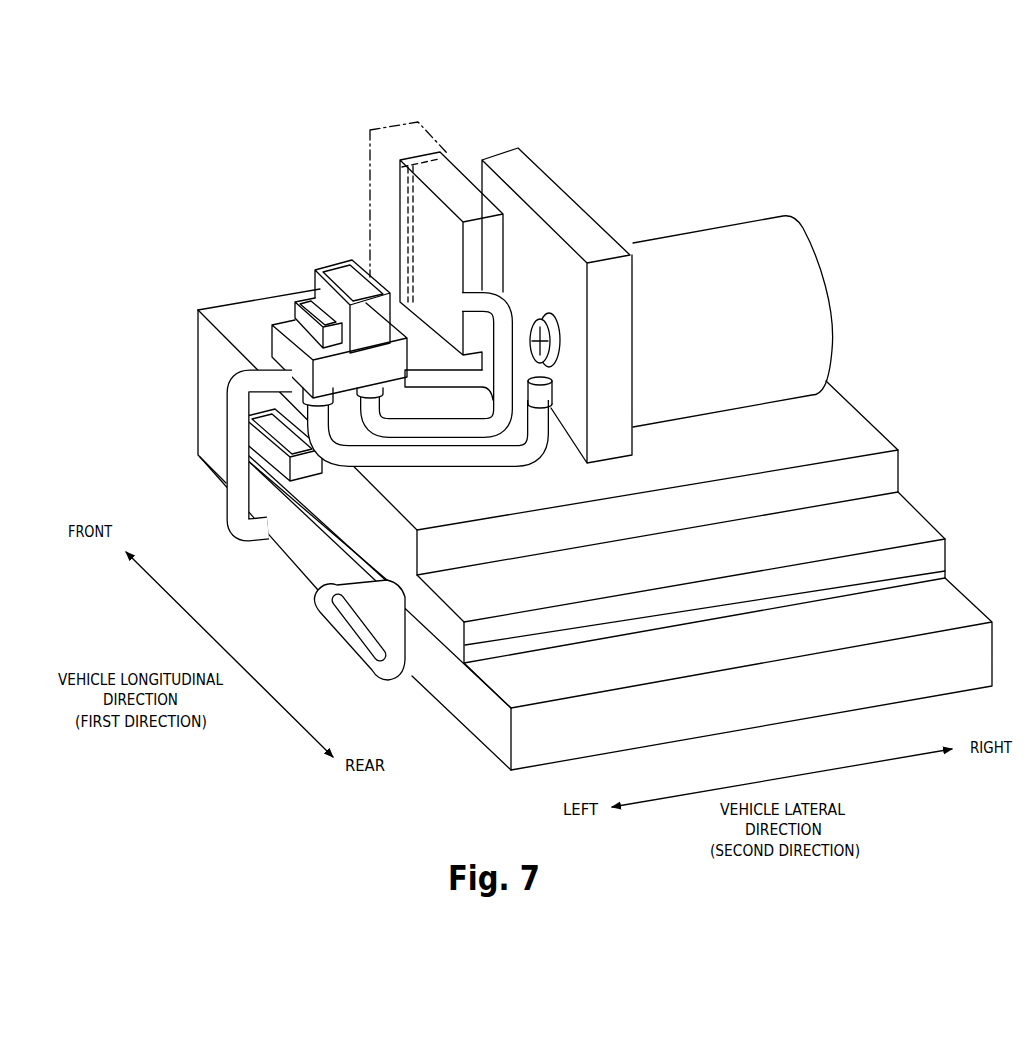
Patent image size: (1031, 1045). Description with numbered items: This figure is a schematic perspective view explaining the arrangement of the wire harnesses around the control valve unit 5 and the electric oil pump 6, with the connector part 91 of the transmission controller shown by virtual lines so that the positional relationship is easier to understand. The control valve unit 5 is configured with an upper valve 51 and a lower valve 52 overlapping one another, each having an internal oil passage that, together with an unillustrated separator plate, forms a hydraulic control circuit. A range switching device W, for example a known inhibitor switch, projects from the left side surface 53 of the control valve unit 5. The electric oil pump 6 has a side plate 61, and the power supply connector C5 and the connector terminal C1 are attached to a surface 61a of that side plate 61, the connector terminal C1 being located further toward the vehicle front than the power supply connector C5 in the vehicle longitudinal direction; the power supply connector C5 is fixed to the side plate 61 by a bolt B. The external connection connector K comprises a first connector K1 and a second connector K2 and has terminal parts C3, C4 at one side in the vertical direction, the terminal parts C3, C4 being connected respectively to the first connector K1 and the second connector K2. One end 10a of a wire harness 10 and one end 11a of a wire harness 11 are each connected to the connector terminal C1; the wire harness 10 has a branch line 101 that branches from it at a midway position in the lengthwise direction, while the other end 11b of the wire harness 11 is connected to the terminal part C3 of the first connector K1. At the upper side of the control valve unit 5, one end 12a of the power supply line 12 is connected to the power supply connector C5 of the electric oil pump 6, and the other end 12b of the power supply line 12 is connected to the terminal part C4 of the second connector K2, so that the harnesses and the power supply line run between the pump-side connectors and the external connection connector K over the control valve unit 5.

The control valve unit 5 is at (187, 386).
The upper valve 51 is at (192, 340).
The lower valve 52 is at (192, 408).
The left side surface 53 is at (383, 527).
The electric oil pump 6 is at (700, 226).
The side plate 61 is at (558, 257).
The surface of the side plate 61a is at (533, 225).
The wire harness 10 is at (449, 229).
The one end of the wire harness 10a is at (481, 330).
The wire harness 11 is at (316, 392).
The one end of the wire harness 11a is at (480, 296).
The other end of the wire harness 11b is at (262, 432).
The power supply line 12 is at (472, 486).
The one end of the power supply line 12a is at (553, 408).
The other end of the power supply line 12b is at (354, 445).
The connector part 91 is at (364, 166).
The branch line 101 is at (322, 548).
The bolt B is at (540, 316).
The connector terminal C1 is at (442, 166).
The terminal part C3 is at (256, 396).
The terminal part C4 is at (383, 392).
The power supply connector C5 is at (566, 331).
The external connection connector K is at (193, 238).
The first connector K1 is at (294, 297).
The second connector K2 is at (322, 261).
The range switching device W is at (260, 447).